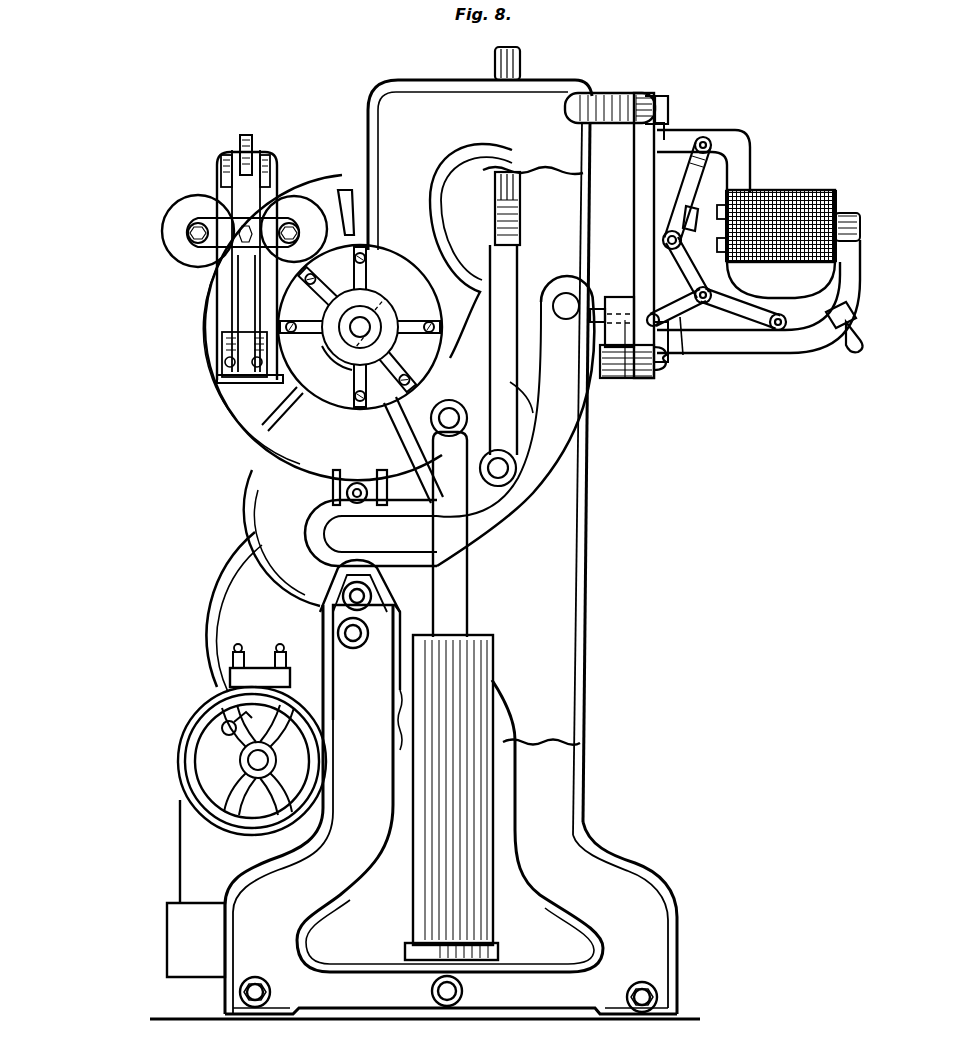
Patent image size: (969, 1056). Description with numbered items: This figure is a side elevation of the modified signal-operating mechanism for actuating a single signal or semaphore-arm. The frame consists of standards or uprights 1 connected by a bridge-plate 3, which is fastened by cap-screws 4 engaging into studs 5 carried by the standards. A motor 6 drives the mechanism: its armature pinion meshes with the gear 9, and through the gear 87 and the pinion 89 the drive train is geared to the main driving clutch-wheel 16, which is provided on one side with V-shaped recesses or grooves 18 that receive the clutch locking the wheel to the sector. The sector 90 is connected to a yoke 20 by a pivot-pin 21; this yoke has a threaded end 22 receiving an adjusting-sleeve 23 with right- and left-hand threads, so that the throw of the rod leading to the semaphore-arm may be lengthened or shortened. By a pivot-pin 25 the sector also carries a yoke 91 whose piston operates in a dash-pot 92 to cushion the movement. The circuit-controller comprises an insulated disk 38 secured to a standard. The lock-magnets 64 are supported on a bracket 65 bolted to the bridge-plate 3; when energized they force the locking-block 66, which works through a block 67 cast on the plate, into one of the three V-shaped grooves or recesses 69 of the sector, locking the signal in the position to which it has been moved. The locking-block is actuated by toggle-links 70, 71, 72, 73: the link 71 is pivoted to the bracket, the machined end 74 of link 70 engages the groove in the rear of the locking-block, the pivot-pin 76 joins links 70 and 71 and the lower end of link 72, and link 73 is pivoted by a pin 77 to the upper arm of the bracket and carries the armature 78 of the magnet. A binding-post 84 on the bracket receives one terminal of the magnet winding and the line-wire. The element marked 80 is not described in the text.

The standards or uprights 1 is at (425, 549).
The bridge-plate 3 is at (634, 158).
The cap-screws 4 is at (668, 106).
The studs 5 is at (608, 97).
The motor 6 is at (246, 810).
The gear 9 is at (234, 612).
The main driving clutch-wheel 16 is at (322, 327).
The recesses or grooves 18 is at (343, 190).
The yoke 20 is at (490, 360).
The pivot-pin 21 is at (503, 462).
The threaded end 22 is at (520, 210).
The adjusting-sleeve 23 is at (495, 62).
The pivot-pin 25 is at (445, 416).
The insulated disk 38 is at (360, 327).
The lock-magnets 64 is at (788, 230).
The brackets 65 is at (757, 352).
The locking-block 66 is at (589, 316).
The block 67 is at (630, 348).
The V-shaped grooves or recesses 69 is at (520, 498).
The toggle-link 70 is at (672, 335).
The toggle-link 71 is at (755, 312).
The toggle-link 72 is at (665, 262).
The toggle-link 73 is at (690, 190).
The machined end 74 is at (630, 298).
The pivot-pin 76 is at (679, 308).
The pin 77 is at (693, 173).
The armature 78 is at (696, 231).
The roller bracket 80 is at (160, 229).
The binding-post 84 is at (845, 348).
The gear 87 is at (282, 538).
The pinion 89 is at (371, 487).
The sector 90 is at (534, 397).
The yoke 91 is at (470, 580).
The dash-pot 92 is at (413, 906).